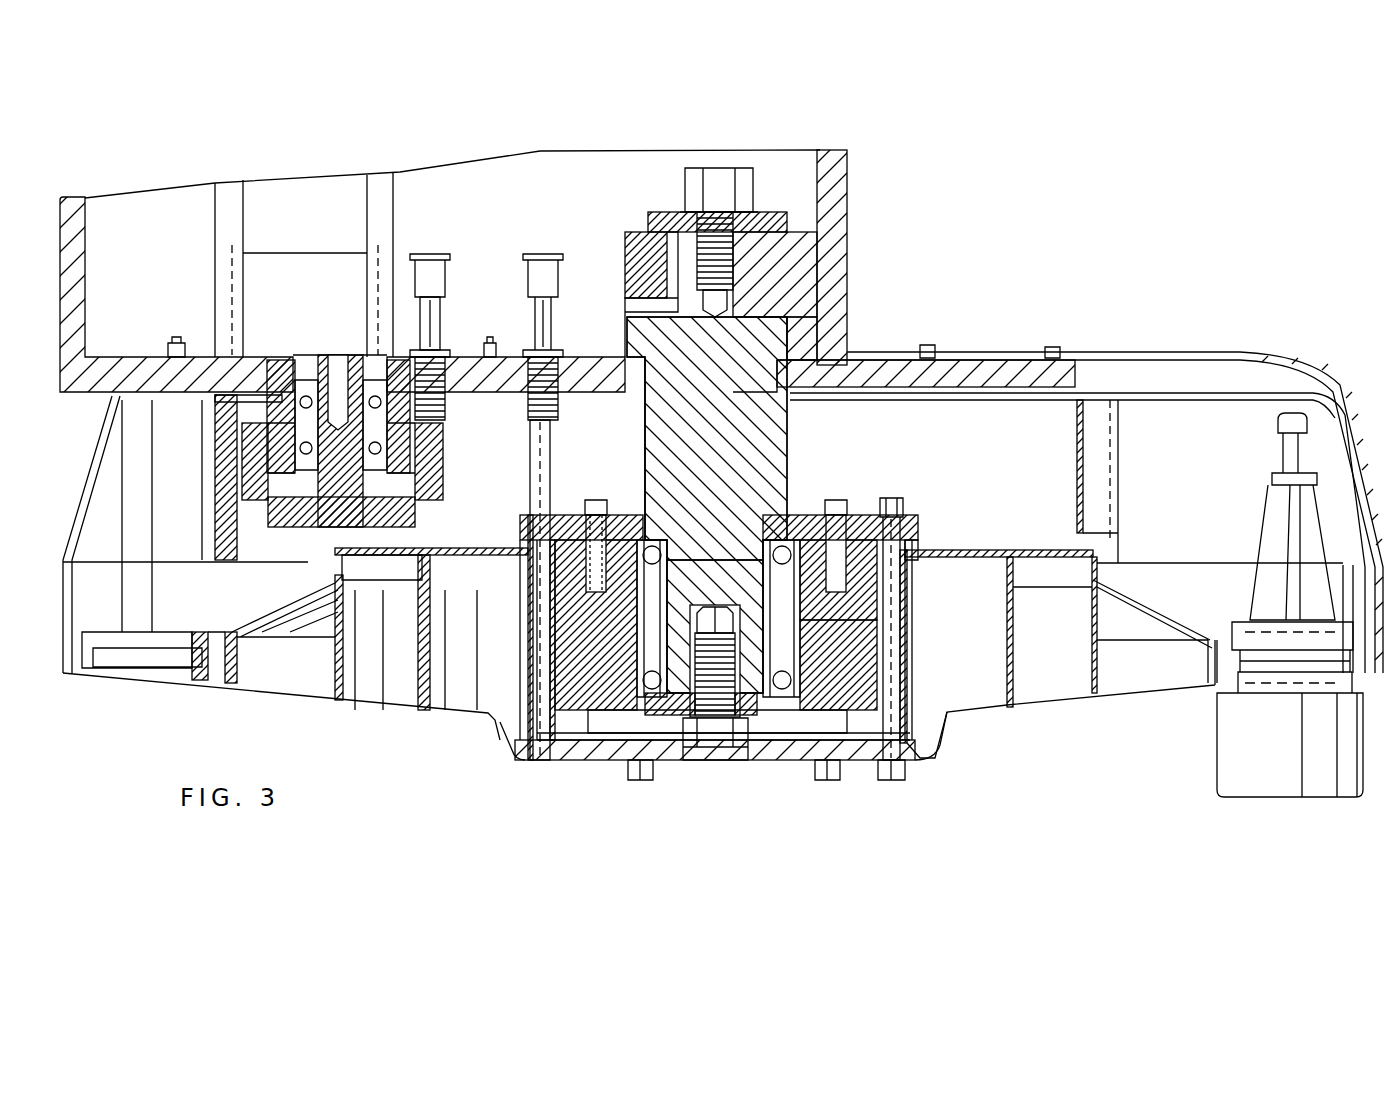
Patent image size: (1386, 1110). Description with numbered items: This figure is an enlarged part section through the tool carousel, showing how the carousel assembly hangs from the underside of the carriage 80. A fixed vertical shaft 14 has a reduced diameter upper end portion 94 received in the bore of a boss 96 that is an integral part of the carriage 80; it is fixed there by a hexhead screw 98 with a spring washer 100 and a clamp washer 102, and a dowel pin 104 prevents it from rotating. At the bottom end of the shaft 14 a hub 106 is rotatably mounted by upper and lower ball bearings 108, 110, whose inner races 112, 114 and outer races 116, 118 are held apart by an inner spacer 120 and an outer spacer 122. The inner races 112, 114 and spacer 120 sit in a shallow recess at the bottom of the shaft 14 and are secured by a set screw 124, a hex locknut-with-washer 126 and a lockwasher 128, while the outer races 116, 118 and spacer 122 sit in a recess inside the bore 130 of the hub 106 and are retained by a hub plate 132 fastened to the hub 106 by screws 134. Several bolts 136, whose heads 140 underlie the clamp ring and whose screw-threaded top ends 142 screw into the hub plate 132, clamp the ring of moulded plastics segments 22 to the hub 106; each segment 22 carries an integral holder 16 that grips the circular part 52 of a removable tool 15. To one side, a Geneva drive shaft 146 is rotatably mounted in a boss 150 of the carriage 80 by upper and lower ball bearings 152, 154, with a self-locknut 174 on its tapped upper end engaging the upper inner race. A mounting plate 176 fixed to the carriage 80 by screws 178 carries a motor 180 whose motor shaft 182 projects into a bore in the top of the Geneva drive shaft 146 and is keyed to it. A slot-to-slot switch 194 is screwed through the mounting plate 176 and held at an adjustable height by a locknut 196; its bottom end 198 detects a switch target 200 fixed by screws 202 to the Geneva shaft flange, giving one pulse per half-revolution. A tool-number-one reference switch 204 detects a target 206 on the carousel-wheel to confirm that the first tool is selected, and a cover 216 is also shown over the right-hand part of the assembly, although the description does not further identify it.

The shaft 14 is at (760, 420).
The tool 15 is at (1275, 517).
The holder 16 is at (145, 632).
The segment 22 is at (1047, 683).
The circular part of tool 52 is at (1265, 660).
The carriage 80 is at (72, 212).
The upper end portion of shaft 94 is at (742, 368).
The boss 96 is at (835, 270).
The hexhead screw 98 is at (718, 168).
The spring washer 100 is at (688, 210).
The clamp washer 102 is at (655, 228).
The dowel pin 104 is at (630, 300).
The hub 106 is at (818, 662).
The upper ball bearing 108 is at (680, 548).
The lower ball bearing 110 is at (788, 714).
The inner race of upper bearing 112 is at (682, 560).
The inner race of lower bearing 114 is at (640, 652).
The outer race of upper bearing 116 is at (600, 598).
The outer race of lower bearing 118 is at (790, 710).
The inner spacer 120 is at (767, 593).
The outer spacer 122 is at (793, 607).
The set screw 124 is at (713, 768).
The hex locknut-with-washer 126 is at (700, 745).
The lockwasher 128 is at (626, 745).
The bore of hub 130 is at (556, 635).
The hub plate 132 is at (615, 518).
The screws 134 is at (586, 500).
The bolts 136 is at (883, 768).
The heads of bolts 140 is at (884, 764).
The screw-threaded top ends of bolts 142 is at (912, 525).
The Geneva drive shaft 146 is at (315, 560).
The boss 150 is at (418, 452).
The upper ball bearing 152 is at (295, 362).
The lower ball bearing 154 is at (288, 462).
The self-locknut 174 is at (367, 355).
The mounting plate 176 is at (243, 355).
The screws 178 is at (175, 343).
The motor 180 is at (308, 268).
The motor shaft 182 is at (345, 380).
The slot-to-slot electrical switch 194 is at (428, 264).
The locknut 196 is at (442, 305).
The bottom end of switch 198 is at (447, 413).
The switch target 200 is at (443, 496).
The screws 202 is at (230, 527).
The Tool No. 1 reference switch 204 is at (540, 264).
The target 206 is at (548, 474).
The cover 216 is at (1035, 352).